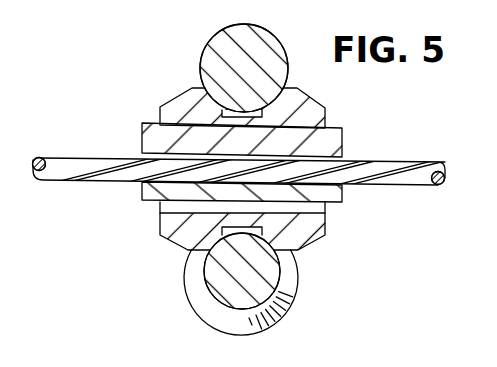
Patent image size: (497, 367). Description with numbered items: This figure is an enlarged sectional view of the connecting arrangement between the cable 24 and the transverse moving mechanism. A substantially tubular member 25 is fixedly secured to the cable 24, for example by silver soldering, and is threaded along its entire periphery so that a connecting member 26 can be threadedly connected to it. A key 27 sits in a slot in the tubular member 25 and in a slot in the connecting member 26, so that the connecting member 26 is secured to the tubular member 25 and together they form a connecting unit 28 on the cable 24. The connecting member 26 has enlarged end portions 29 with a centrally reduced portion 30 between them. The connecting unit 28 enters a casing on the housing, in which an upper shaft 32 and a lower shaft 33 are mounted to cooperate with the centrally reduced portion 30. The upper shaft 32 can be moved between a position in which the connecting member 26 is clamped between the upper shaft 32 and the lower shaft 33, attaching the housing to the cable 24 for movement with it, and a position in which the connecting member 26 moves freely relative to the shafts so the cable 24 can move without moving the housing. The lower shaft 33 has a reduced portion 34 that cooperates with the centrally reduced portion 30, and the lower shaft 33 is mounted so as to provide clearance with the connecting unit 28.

The cable 24 is at (432, 161).
The tubular member 25 is at (343, 192).
The connecting member 26 is at (150, 226).
The key 27 is at (142, 131).
The connecting unit 28 is at (348, 218).
The enlarged end portions 29 is at (172, 100).
The centrally reduced portion 30 is at (293, 258).
The upper shaft 32 is at (266, 42).
The lower shaft 33 is at (196, 322).
The reduced portion 34 is at (212, 272).